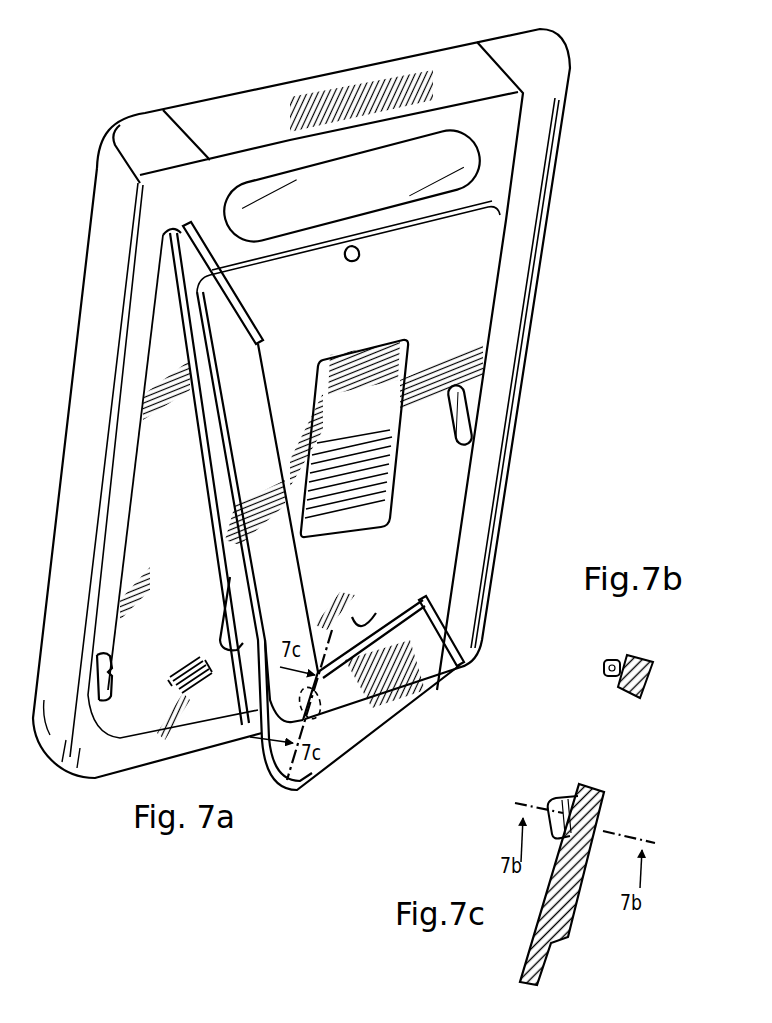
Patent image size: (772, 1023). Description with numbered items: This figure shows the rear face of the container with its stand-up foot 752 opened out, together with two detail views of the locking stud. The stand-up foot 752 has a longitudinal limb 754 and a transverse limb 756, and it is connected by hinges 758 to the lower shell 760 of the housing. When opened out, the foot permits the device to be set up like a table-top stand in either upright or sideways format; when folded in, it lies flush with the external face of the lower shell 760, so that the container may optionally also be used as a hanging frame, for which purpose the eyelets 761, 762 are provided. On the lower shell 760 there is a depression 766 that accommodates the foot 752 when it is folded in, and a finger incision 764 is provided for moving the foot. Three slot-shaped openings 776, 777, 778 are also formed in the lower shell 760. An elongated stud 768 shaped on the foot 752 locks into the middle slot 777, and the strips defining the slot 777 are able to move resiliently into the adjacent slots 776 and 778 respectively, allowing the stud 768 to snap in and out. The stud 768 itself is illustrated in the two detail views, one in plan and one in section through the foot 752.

In FIG. 7A, the stand-up foot 752 is at (352, 507).
In FIG. 7B, the stand-up foot 752 is at (620, 690).
In FIG. 7C, the stand-up foot 752 is at (595, 818).
In FIG. 7A, the longitudinal limb 754 is at (262, 402).
In FIG. 7A, the transverse limb 756 is at (392, 709).
In FIG. 7A, the hinges 758 is at (250, 314).
In FIG. 7A, the lower shell 760 is at (470, 330).
In FIG. 7A, the eyelet 761 is at (462, 422).
In FIG. 7A, the eyelet 762 is at (359, 255).
In FIG. 7A, the finger incision 764 is at (97, 667).
In FIG. 7A, the depression 766 is at (130, 537).
In FIG. 7A, the stud 768 is at (320, 710).
In FIG. 7B, the stud 768 is at (610, 660).
In FIG. 7C, the stud 768 is at (572, 798).
In FIG. 7A, the slot-shaped opening 776 is at (186, 660).
In FIG. 7A, the slot-shaped opening 777 is at (178, 682).
In FIG. 7A, the slot-shaped opening 778 is at (199, 676).